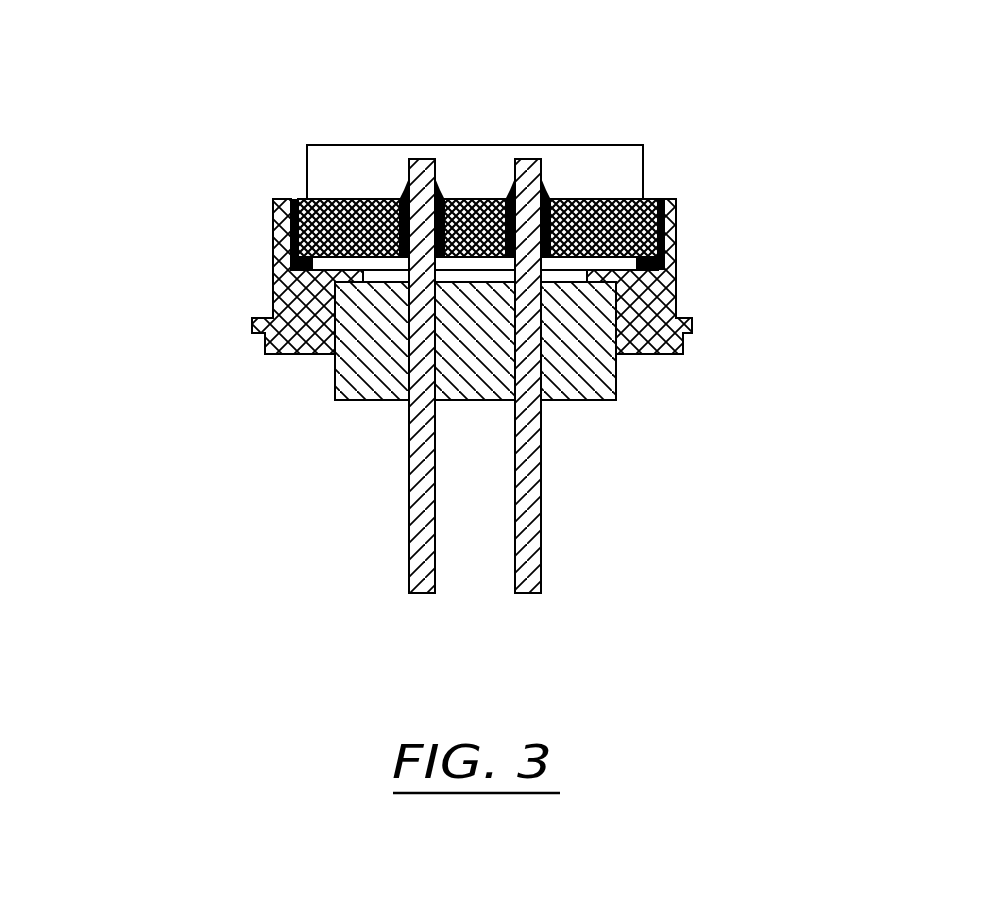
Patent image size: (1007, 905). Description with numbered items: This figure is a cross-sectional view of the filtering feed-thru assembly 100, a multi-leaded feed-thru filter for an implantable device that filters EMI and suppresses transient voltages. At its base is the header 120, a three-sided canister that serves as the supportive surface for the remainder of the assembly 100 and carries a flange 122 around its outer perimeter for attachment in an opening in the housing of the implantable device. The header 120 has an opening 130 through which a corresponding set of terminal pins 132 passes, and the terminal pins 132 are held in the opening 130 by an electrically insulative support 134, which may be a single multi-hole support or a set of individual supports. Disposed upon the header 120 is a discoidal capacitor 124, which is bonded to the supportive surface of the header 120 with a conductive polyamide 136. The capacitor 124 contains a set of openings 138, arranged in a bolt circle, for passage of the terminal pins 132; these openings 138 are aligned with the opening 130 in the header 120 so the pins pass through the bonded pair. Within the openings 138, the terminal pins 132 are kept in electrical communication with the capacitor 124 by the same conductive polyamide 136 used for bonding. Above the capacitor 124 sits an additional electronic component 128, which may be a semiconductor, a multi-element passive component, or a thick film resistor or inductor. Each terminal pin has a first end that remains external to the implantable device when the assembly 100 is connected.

The filtering feed-thru assembly 100 is at (471, 305).
The header 120 is at (457, 276).
The flange 122 is at (453, 332).
The discoidal capacitor 124 is at (565, 228).
The electronic component 128 is at (446, 126).
The opening 130 is at (439, 365).
The terminal pins 132 is at (480, 376).
The electrically insulative support 134 is at (524, 371).
The conductive polyamide 136 is at (466, 152).
The openings 138 is at (474, 144).